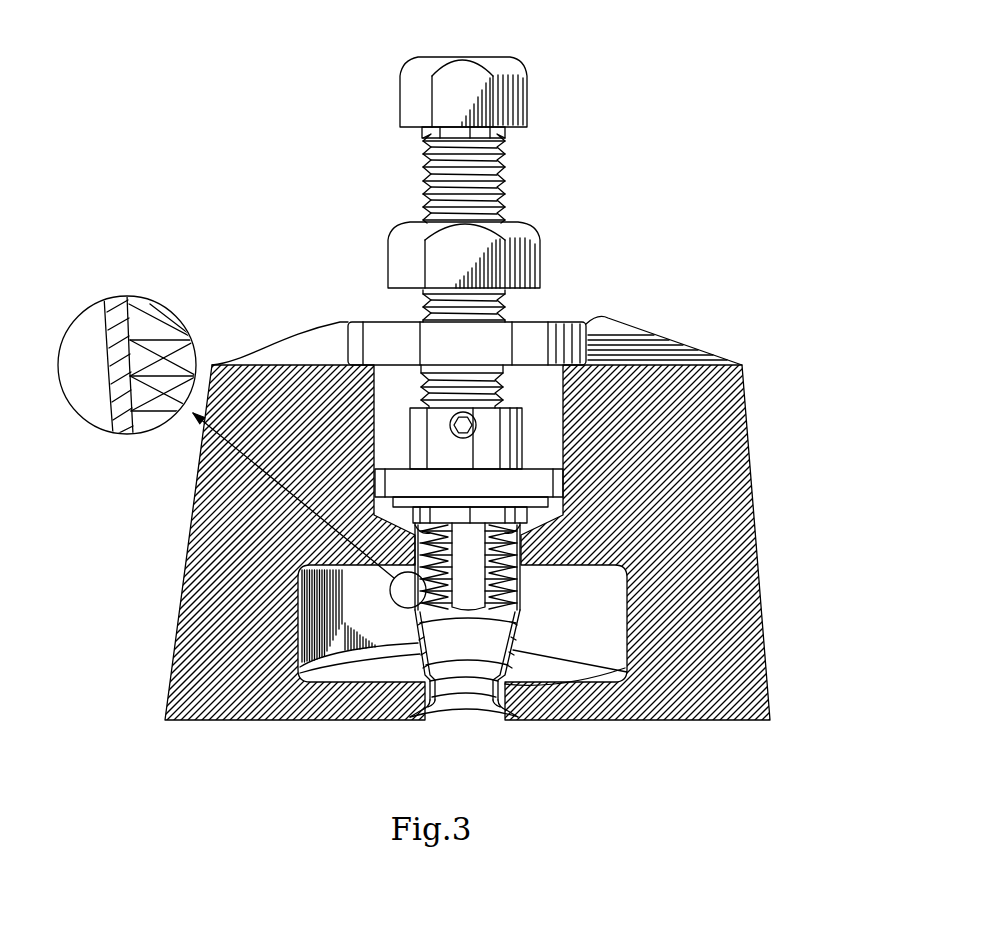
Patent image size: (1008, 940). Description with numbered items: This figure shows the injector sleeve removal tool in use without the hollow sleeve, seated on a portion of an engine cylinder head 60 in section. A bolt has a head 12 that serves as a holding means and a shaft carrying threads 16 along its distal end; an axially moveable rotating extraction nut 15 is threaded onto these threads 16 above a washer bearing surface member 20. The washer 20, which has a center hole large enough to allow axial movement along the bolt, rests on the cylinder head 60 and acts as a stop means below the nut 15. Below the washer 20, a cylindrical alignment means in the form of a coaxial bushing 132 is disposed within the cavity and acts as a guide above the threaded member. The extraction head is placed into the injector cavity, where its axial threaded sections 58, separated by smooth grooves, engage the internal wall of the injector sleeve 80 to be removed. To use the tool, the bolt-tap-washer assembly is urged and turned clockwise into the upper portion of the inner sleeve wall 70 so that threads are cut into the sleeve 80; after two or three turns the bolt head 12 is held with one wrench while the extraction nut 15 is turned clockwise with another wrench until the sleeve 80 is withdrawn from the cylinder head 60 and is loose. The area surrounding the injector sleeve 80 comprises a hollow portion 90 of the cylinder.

The head 12 is at (517, 74).
The threads 16 is at (497, 170).
The extraction nut 15 is at (527, 248).
The washer bearing surface member 20 is at (530, 342).
The axial threaded sections 58 is at (497, 552).
The coaxial bushing 132 is at (390, 477).
The cylinder head 60 is at (258, 366).
The hollow portion 90 is at (333, 633).
The injector sleeve 80 is at (452, 693).
The inner sleeve wall 70 is at (513, 578).